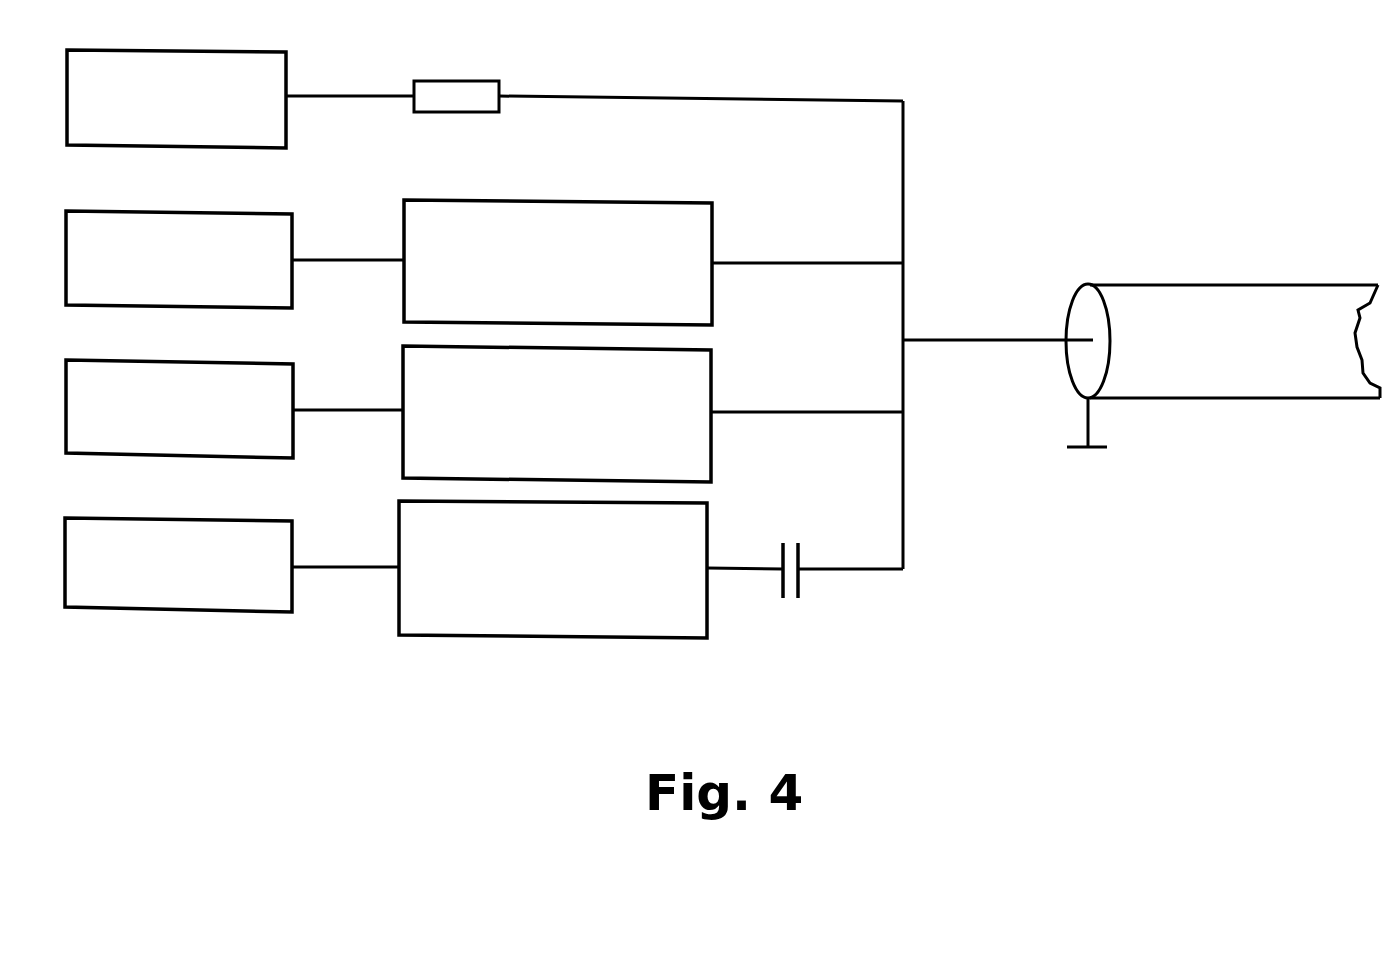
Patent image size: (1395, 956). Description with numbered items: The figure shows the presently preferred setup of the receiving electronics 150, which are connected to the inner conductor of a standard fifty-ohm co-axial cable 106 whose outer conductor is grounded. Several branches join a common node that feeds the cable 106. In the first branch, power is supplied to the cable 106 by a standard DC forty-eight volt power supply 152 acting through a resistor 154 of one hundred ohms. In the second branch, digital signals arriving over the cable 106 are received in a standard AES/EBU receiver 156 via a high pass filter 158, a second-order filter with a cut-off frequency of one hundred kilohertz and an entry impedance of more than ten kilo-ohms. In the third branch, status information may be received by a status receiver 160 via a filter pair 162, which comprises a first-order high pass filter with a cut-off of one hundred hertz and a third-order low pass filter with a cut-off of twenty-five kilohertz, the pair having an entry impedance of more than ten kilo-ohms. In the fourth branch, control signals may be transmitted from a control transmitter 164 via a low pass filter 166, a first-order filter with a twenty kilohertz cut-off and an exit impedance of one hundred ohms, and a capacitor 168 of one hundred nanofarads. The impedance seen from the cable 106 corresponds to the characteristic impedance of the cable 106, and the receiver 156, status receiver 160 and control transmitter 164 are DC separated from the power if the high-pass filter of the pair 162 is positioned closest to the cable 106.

The co-axial cable 106 is at (1212, 418).
The receiving electronics 150 is at (992, 157).
The power supply 152 is at (240, 99).
The resistor 154 is at (658, 78).
The AES/EBU receiver 156 is at (235, 259).
The high pass filter 158 is at (653, 262).
The status receiver 160 is at (234, 409).
The filter pair 162 is at (653, 414).
The control transmitter 164 is at (232, 565).
The low pass filter 166 is at (591, 569).
The capacitor 168 is at (778, 614).